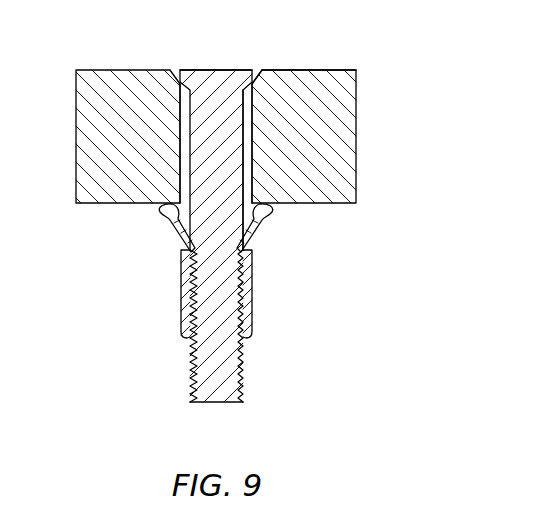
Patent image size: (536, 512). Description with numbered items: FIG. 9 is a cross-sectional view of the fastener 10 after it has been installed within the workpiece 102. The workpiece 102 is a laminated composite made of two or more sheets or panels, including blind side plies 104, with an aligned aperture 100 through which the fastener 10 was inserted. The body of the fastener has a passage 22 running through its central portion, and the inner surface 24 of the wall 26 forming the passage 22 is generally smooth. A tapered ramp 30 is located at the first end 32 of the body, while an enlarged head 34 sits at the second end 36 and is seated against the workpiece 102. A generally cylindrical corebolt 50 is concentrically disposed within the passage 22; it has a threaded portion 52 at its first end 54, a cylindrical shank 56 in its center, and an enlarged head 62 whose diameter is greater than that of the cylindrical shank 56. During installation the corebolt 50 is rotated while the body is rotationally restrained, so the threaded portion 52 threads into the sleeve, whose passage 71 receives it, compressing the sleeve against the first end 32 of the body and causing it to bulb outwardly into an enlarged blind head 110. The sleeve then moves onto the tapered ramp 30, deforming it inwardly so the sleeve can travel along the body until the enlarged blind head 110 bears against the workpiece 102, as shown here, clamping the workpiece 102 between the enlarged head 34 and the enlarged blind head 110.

The fastener 10 is at (150, 271).
The passage 22 is at (248, 152).
The inner surface 24 is at (192, 185).
The wall 26 is at (251, 178).
The tapered ramp 30 is at (253, 243).
The first end 32 is at (266, 218).
The enlarged head 34 is at (254, 120).
The second end 36 is at (253, 123).
The corebolt 50 is at (217, 295).
The threaded portion 52 is at (242, 367).
The first end 54 is at (243, 382).
The cylindrical shank 56 is at (213, 125).
The enlarged head 62 is at (247, 70).
The passage 71 is at (183, 312).
The aperture 100 is at (188, 130).
The workpiece 102 is at (78, 130).
The blind side plies 104 is at (345, 203).
The enlarged blind head 110 is at (172, 224).